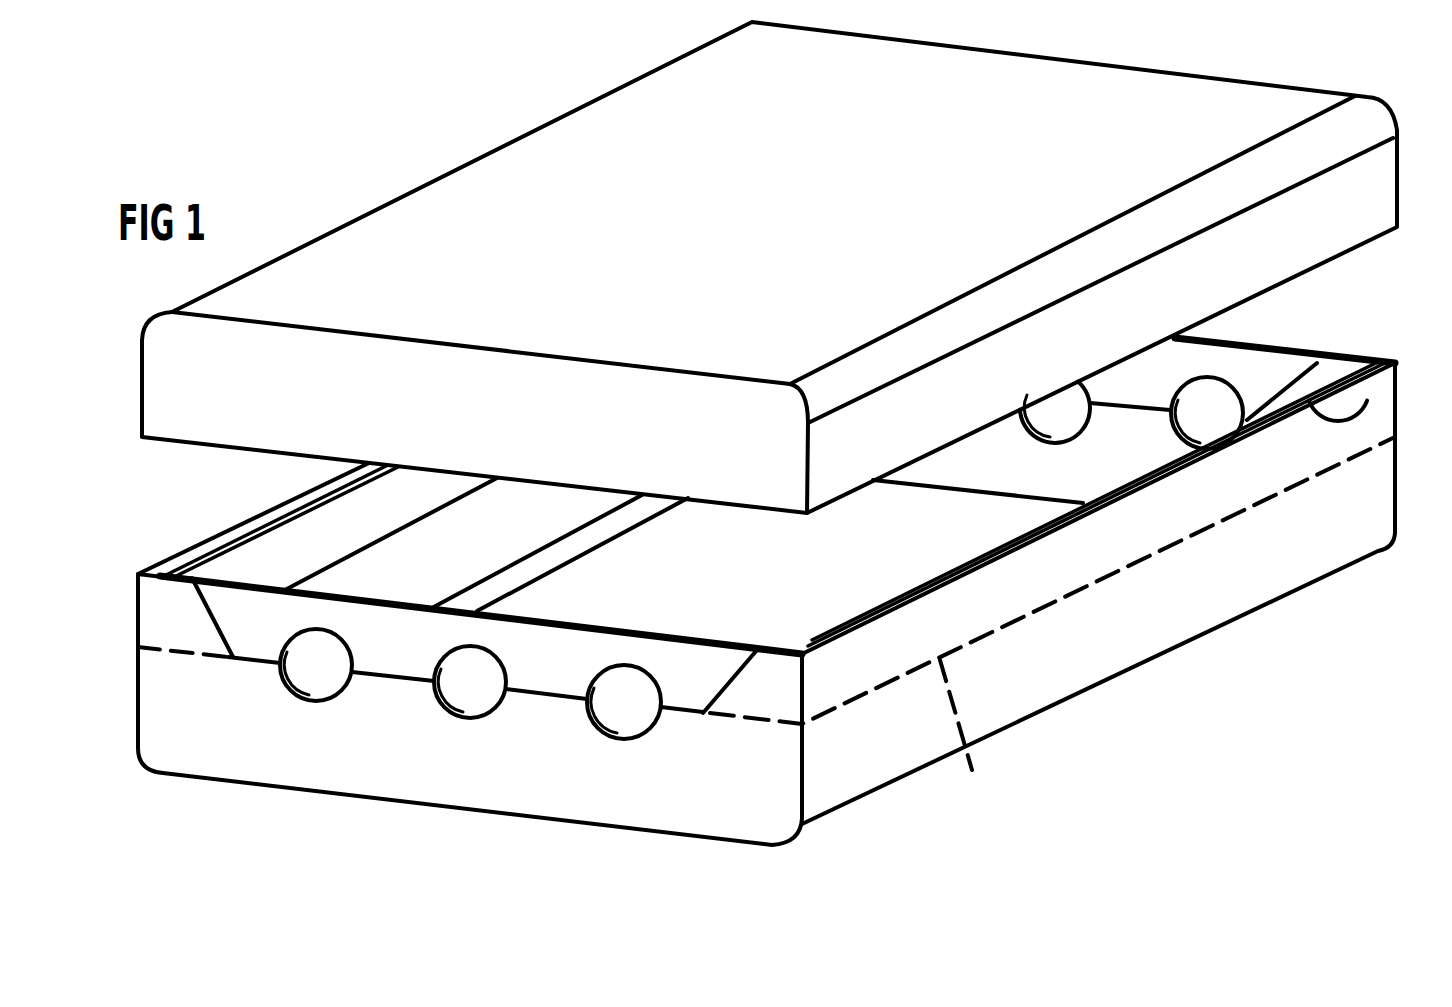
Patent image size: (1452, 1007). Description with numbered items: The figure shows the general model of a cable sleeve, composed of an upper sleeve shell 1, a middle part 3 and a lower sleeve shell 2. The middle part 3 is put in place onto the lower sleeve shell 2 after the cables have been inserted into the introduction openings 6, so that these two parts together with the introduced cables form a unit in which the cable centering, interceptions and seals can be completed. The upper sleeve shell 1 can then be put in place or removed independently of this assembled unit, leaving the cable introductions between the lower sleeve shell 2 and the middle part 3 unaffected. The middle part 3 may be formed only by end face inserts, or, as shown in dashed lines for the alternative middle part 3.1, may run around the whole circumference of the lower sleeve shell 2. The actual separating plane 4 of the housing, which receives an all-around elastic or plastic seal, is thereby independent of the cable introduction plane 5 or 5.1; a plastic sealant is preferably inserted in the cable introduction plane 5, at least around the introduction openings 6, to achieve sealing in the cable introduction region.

The upper sleeve shell 1 is at (1313, 237).
The lower sleeve shell 2 is at (1113, 632).
The middle part 3 is at (395, 651).
The alternative middle part 3.1 is at (1213, 495).
The separating plane 4 is at (1306, 398).
The cable introduction plane 5 is at (680, 713).
The cable introduction plane 5.1 is at (981, 736).
The introduction openings 6 is at (621, 708).